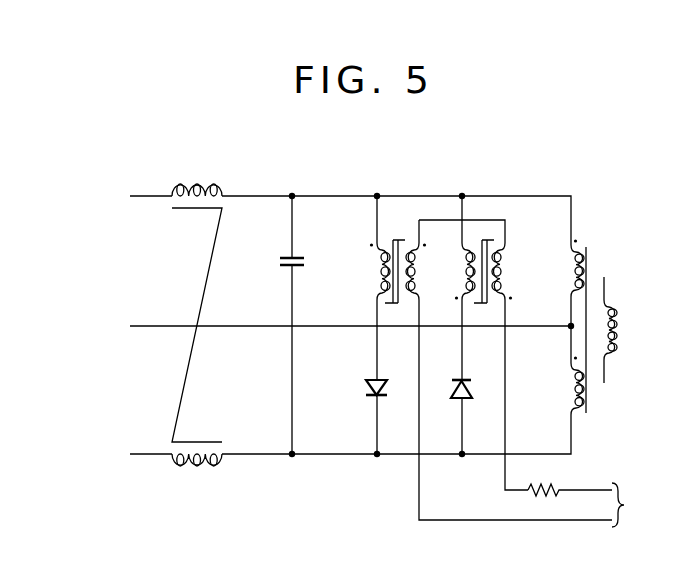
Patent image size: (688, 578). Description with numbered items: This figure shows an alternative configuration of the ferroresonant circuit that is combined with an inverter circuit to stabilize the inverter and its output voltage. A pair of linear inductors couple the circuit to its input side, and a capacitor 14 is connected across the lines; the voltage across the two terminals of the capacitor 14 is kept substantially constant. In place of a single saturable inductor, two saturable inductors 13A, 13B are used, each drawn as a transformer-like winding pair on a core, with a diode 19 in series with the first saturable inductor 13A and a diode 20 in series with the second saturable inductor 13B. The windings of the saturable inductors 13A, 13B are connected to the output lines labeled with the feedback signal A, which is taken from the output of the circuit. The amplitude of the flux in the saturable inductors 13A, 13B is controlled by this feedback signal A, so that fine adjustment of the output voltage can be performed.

The saturable inductor 13A is at (397, 232).
The saturable inductor 13B is at (484, 232).
The capacitor 14 is at (299, 269).
The diode 19 is at (363, 388).
The diode 20 is at (450, 403).
The feedback signal A is at (589, 505).